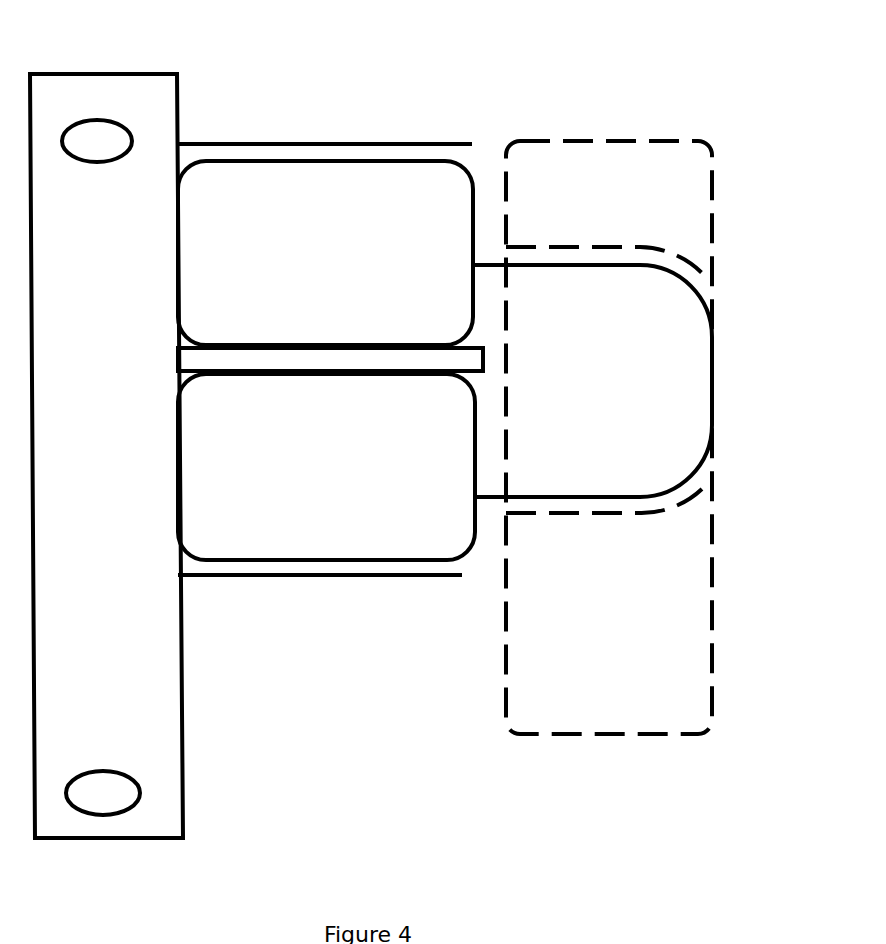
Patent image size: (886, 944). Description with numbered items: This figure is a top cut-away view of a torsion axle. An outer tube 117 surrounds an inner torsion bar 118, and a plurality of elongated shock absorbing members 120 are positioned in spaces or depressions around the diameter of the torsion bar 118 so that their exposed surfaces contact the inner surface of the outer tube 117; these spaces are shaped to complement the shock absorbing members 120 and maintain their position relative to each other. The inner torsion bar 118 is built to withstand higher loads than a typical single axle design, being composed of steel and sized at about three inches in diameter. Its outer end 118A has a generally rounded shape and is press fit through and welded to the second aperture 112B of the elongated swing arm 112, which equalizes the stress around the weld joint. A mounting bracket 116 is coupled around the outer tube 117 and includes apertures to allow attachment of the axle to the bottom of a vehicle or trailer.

The swing arm 112 is at (598, 140).
The second aperture 112B is at (665, 248).
The mounting bracket 116 is at (150, 93).
The outer tube 117 is at (367, 142).
The inner torsion bar 118 is at (383, 373).
The outer end 118A is at (687, 445).
The shock absorbing member 120 is at (288, 486).